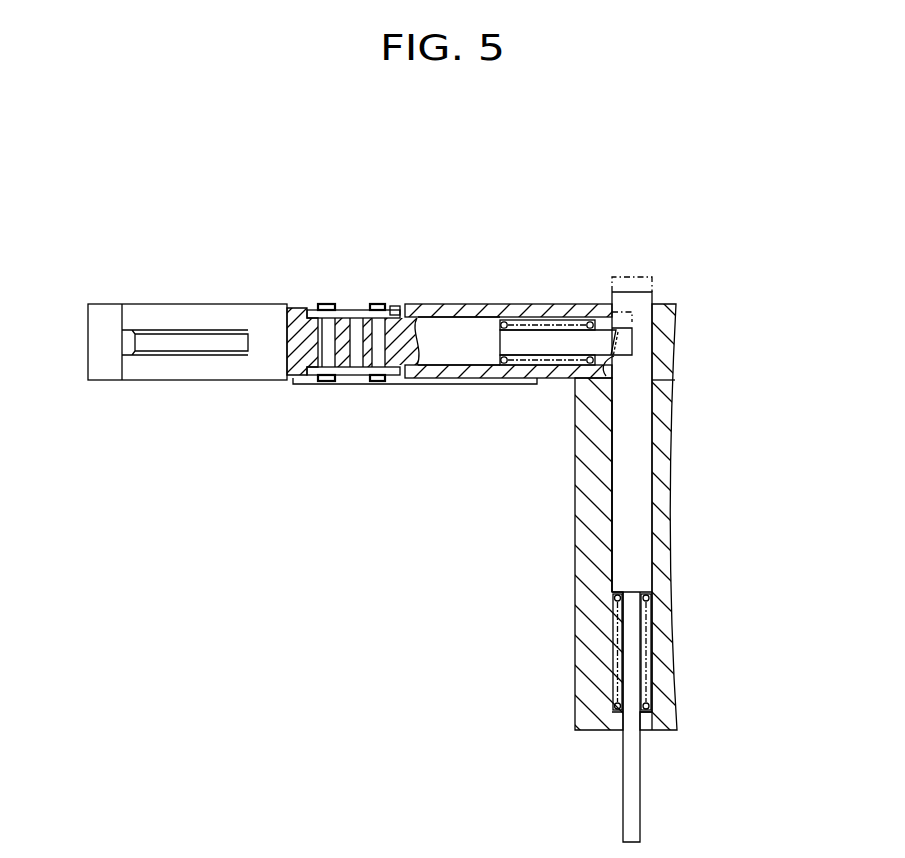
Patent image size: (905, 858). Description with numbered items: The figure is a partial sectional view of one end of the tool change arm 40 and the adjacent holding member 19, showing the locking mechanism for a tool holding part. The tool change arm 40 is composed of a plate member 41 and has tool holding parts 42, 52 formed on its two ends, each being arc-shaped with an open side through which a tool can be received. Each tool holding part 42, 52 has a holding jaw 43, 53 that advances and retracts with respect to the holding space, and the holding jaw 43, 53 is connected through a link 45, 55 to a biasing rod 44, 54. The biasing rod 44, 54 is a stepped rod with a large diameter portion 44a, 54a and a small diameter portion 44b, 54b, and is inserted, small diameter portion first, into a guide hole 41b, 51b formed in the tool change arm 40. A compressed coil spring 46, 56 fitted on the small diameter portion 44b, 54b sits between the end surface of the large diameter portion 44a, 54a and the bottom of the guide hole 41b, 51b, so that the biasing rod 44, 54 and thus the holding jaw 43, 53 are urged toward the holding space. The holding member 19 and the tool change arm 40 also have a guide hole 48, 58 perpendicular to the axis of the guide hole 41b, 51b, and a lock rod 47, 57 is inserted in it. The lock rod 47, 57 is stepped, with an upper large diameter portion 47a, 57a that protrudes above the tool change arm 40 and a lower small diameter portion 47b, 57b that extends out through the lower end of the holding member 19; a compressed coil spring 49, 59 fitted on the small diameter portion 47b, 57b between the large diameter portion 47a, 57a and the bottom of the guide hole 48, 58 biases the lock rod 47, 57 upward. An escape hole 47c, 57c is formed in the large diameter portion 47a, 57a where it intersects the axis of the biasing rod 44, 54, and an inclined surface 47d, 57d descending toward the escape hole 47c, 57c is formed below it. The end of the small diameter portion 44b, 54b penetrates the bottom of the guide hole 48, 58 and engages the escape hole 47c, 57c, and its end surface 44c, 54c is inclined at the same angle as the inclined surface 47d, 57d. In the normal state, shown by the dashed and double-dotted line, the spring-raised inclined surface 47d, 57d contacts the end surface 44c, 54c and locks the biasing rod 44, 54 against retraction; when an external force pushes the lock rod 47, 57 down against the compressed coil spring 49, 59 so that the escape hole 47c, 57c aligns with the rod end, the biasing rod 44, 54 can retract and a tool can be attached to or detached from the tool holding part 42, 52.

The holding member 19 is at (583, 590).
The tool change arm 40 is at (351, 455).
The plate member 41 is at (423, 378).
The guide hole 41b is at (468, 355).
The tool holding part 42 is at (195, 423).
The holding jaw 43 is at (294, 308).
The biasing rod 44 is at (527, 281).
The large diameter portion 44a is at (468, 320).
The small diameter portion 44b is at (572, 335).
The end surface 44c is at (613, 253).
The link 45 is at (355, 296).
The compressed coil spring 46 is at (504, 321).
The lock rod 47 is at (638, 517).
The large diameter portion 47a is at (648, 570).
The small diameter portion 47b is at (628, 810).
The escape hole 47c is at (628, 347).
The inclined surface 47d is at (612, 364).
The guide hole 48 is at (608, 519).
The compressed coil spring 49 is at (612, 706).
The guide hole 51b is at (459, 387).
The tool holding part 52 is at (187, 406).
The holding jaw 53 is at (291, 294).
The biasing rod 54 is at (527, 281).
The large diameter portion 54a is at (508, 280).
The small diameter portion 54b is at (508, 309).
The end surface 54c is at (613, 253).
The link 55 is at (353, 291).
The compressed coil spring 56 is at (559, 292).
The lock rod 57 is at (638, 517).
The large diameter portion 57a is at (703, 638).
The small diameter portion 57b is at (568, 786).
The escape hole 57c is at (696, 332).
The inclined surface 57d is at (688, 397).
The guide hole 58 is at (559, 496).
The compressed coil spring 59 is at (577, 652).